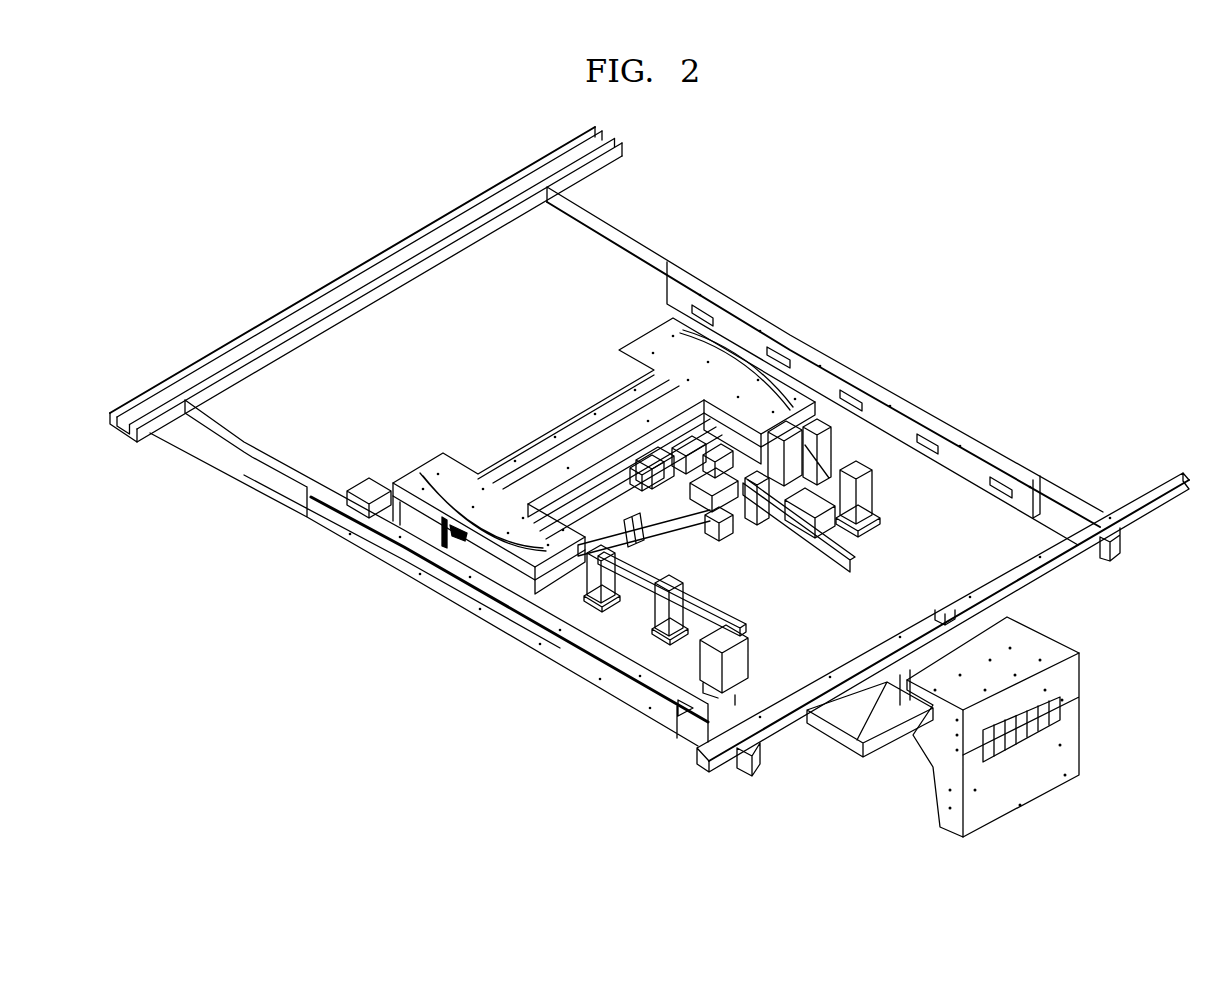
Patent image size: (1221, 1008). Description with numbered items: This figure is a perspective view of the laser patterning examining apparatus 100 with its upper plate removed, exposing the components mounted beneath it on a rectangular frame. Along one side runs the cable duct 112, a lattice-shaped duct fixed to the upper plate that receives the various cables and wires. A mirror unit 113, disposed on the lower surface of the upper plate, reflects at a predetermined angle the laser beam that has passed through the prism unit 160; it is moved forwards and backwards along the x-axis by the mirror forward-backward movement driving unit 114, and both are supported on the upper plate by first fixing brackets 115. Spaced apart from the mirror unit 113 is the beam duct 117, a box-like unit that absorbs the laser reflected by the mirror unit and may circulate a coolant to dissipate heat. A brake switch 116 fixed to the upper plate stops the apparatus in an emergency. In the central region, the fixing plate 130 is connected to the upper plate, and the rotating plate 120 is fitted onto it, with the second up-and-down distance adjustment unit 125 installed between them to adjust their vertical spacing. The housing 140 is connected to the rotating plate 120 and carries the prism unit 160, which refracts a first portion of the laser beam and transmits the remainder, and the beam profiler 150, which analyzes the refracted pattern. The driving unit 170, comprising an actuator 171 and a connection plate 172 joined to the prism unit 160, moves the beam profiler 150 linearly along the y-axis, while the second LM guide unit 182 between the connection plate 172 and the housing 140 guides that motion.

The laser patterning examining apparatus 100 is at (986, 166).
The cable duct 112 is at (710, 293).
The mirror unit 113 is at (683, 540).
The mirror forward-backward movement driving unit 114 is at (800, 510).
The first fixing bracket 115 is at (860, 497).
The brake switch 116 is at (370, 492).
The beam duct 117 is at (1055, 646).
The rotating plate 120 is at (495, 518).
The second up-and-down distance adjustment unit 125 is at (437, 548).
The fixing plate 130 is at (530, 557).
The housing 140 is at (550, 577).
The beam profiler 150 is at (713, 407).
The prism unit 160 is at (762, 450).
The driving unit 170 is at (575, 352).
The actuator 171 is at (582, 493).
The connection plate 172 is at (643, 455).
The second LM guide unit 182 is at (628, 522).